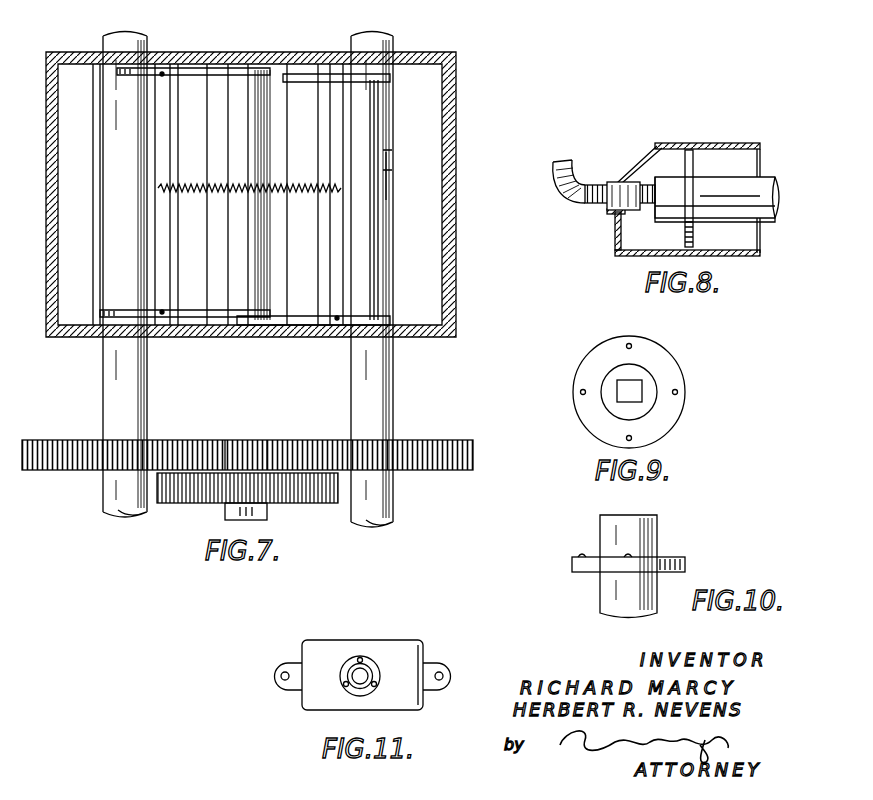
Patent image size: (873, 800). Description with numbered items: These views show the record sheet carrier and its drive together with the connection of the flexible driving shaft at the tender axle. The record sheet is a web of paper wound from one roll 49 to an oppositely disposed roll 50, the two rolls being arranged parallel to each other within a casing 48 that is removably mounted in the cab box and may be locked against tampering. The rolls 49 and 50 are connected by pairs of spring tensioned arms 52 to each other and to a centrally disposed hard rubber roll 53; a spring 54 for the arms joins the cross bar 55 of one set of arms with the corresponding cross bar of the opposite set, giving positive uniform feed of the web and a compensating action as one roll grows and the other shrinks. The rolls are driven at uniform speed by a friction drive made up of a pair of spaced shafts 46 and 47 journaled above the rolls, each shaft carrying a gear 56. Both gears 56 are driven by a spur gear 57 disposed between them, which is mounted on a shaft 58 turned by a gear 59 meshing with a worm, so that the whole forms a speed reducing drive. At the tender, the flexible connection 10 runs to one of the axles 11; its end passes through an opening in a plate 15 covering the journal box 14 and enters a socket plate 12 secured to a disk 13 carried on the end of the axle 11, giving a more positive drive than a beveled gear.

In FIG. 8, the flexible connection 10 is at (565, 160).
In FIG. 8, the axle 11 is at (768, 178).
In FIG. 10, the axle 11 is at (600, 590).
In FIG. 8, the socket plate 12 is at (658, 222).
In FIG. 9, the socket plate 12 is at (645, 382).
In FIG. 8, the disk 13 is at (696, 164).
In FIG. 9, the disk 13 is at (675, 408).
In FIG. 10, the disk 13 is at (678, 572).
In FIG. 8, the journal box 14 is at (712, 146).
In FIG. 8, the plate 15 is at (628, 182).
In FIG. 11, the plate 15 is at (408, 653).
In FIG. 7, the shaft 46 is at (146, 378).
In FIG. 7, the shaft 47 is at (392, 378).
In FIG. 7, the casing 48 is at (434, 238).
In FIG. 7, the roll 49 is at (108, 184).
In FIG. 7, the roll 50 is at (394, 145).
In FIG. 7, the spring tensioned arms 52 is at (192, 76).
In FIG. 7, the hard rubber roll 53 is at (262, 96).
In FIG. 7, the spring 54 is at (218, 183).
In FIG. 7, the cross bar 55 is at (338, 117).
In FIG. 7, the gear 56 is at (186, 440).
In FIG. 7, the spur gear 57 is at (250, 440).
In FIG. 7, the shaft 58 is at (225, 515).
In FIG. 7, the gear 59 is at (160, 507).